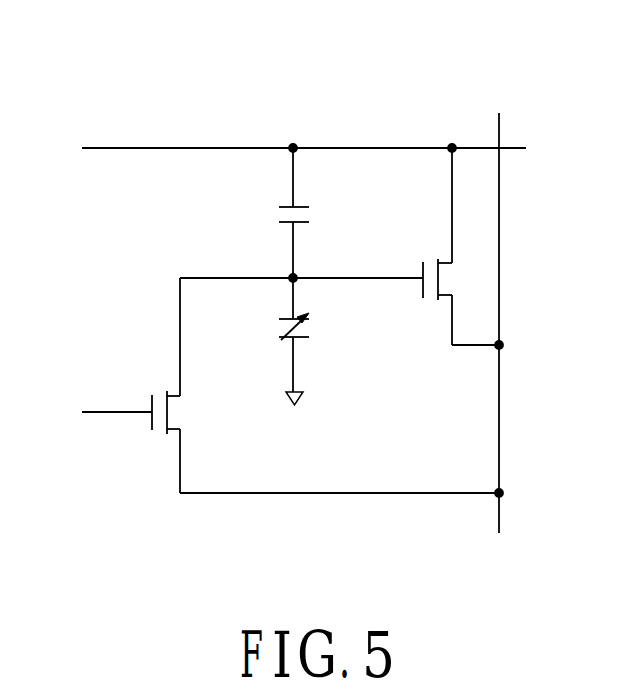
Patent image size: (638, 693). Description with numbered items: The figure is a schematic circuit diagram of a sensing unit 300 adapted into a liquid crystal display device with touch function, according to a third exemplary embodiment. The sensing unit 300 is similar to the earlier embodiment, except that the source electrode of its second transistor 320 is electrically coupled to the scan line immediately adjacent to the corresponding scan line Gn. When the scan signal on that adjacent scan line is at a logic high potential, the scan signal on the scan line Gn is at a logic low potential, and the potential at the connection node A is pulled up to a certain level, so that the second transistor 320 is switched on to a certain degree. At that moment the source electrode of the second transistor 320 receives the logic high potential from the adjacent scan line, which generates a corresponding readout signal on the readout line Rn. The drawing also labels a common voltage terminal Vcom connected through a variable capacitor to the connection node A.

The sensing unit 300 is at (326, 53).
The second transistor 320 is at (437, 277).
The connection node A is at (301, 262).
The scan line Gn is at (272, 385).
The readout line Rn is at (499, 340).
The common voltage Vcom is at (318, 407).